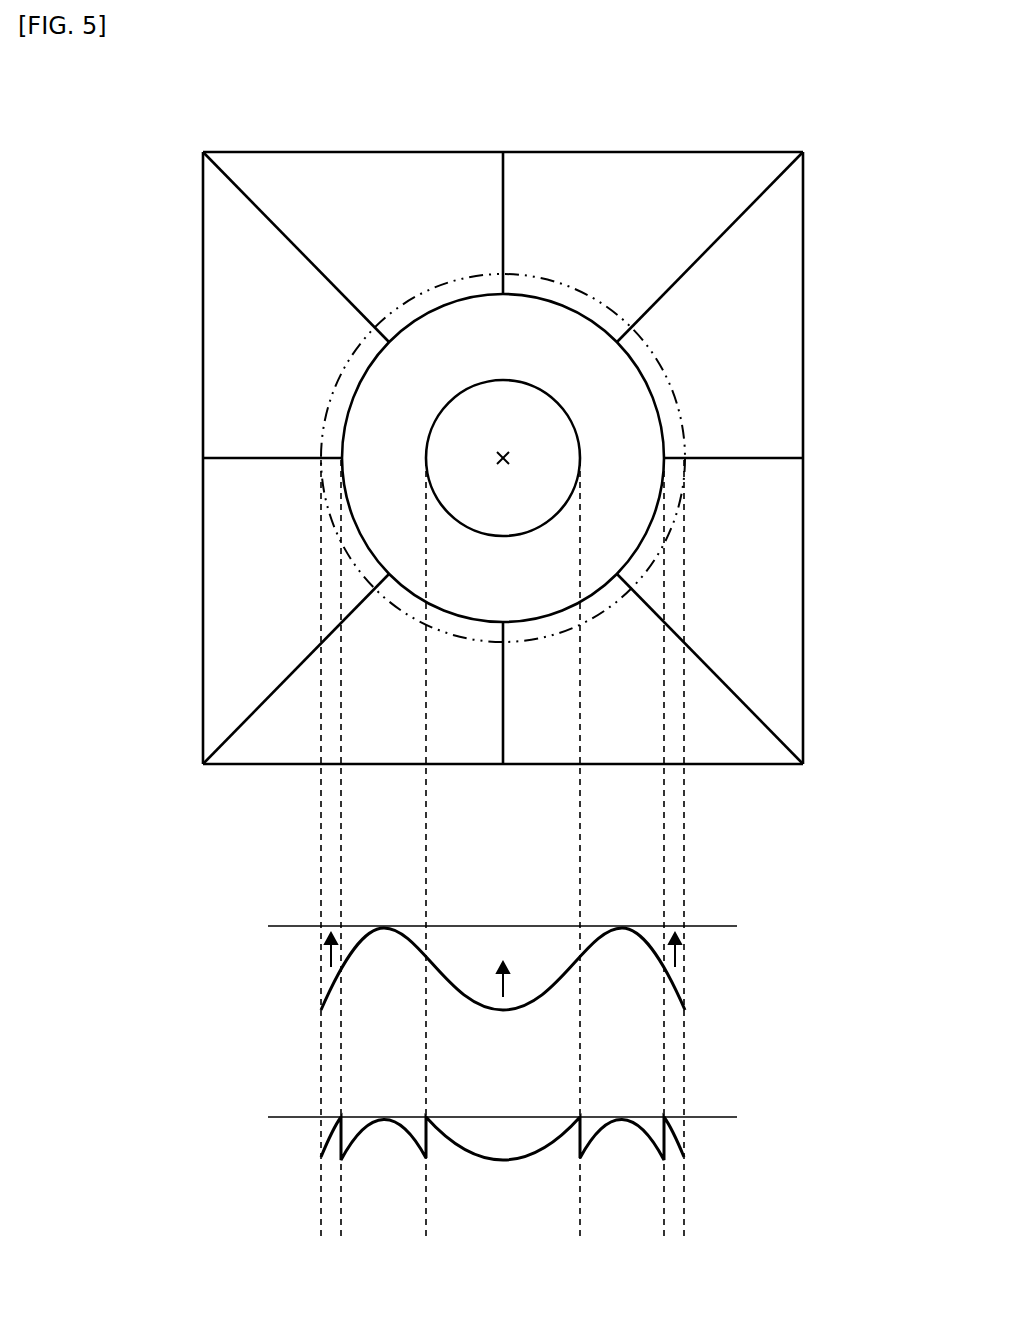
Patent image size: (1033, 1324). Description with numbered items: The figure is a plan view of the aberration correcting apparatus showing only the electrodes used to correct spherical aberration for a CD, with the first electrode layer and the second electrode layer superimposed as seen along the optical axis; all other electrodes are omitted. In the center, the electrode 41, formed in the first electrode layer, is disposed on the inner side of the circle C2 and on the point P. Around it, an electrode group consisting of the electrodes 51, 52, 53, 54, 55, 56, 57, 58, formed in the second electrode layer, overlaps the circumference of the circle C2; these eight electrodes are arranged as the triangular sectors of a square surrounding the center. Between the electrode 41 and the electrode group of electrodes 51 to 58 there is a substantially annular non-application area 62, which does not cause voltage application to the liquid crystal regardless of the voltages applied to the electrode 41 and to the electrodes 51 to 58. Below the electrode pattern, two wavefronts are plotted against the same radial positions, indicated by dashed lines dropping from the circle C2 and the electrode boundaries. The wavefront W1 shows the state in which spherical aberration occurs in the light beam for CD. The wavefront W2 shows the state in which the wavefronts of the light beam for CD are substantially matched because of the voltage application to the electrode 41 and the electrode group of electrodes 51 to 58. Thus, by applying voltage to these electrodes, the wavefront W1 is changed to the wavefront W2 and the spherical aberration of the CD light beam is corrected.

The electrode 41 is at (455, 438).
The non-application area 62 is at (537, 343).
The electrode 51 is at (337, 166).
The electrode 52 is at (664, 168).
The electrode 53 is at (793, 272).
The electrode 54 is at (795, 681).
The electrode 55 is at (748, 748).
The electrode 56 is at (262, 748).
The electrode 57 is at (210, 632).
The electrode 58 is at (210, 262).
The circle C2 is at (680, 398).
The point P is at (503, 479).
The wavefront W1 is at (680, 980).
The wavefront W2 is at (680, 1135).